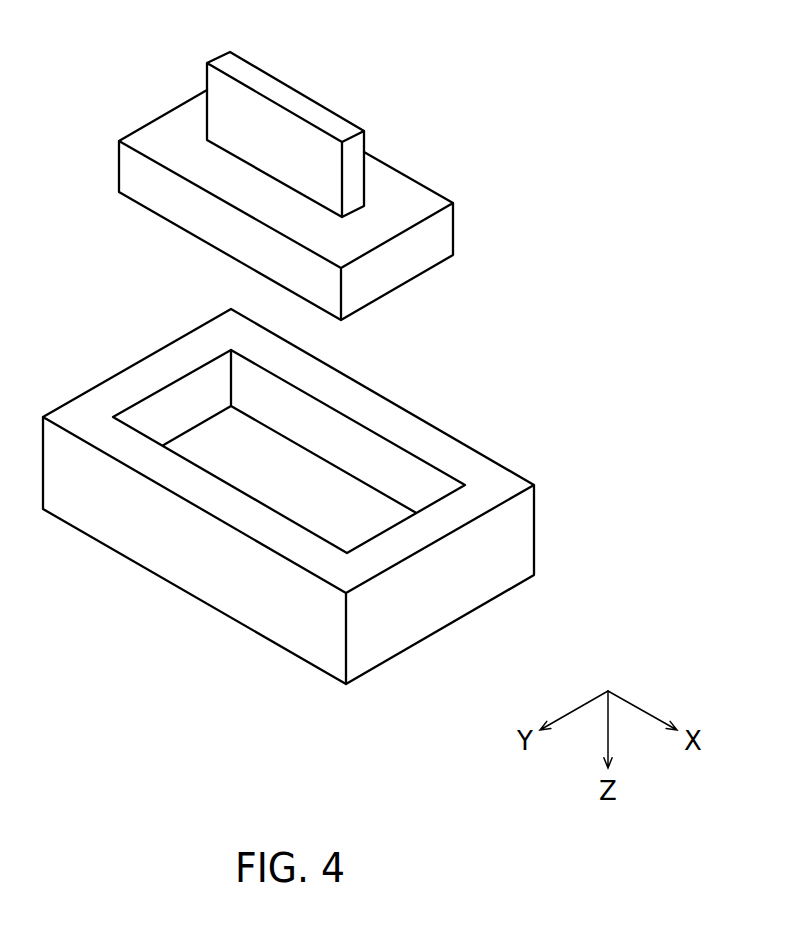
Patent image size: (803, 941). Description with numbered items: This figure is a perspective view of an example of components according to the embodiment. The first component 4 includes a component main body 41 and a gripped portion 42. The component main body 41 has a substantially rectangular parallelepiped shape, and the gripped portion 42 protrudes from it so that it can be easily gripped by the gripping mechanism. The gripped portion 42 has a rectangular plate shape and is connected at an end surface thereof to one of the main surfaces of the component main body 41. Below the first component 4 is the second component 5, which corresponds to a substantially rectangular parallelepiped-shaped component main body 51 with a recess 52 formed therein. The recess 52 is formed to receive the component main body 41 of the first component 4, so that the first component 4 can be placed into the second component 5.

The first component 4 is at (318, 173).
The component main body 41 is at (410, 262).
The gripped portion 42 is at (313, 99).
The second component 5 is at (309, 513).
The component main body 51 is at (413, 620).
The recess 52 is at (378, 455).